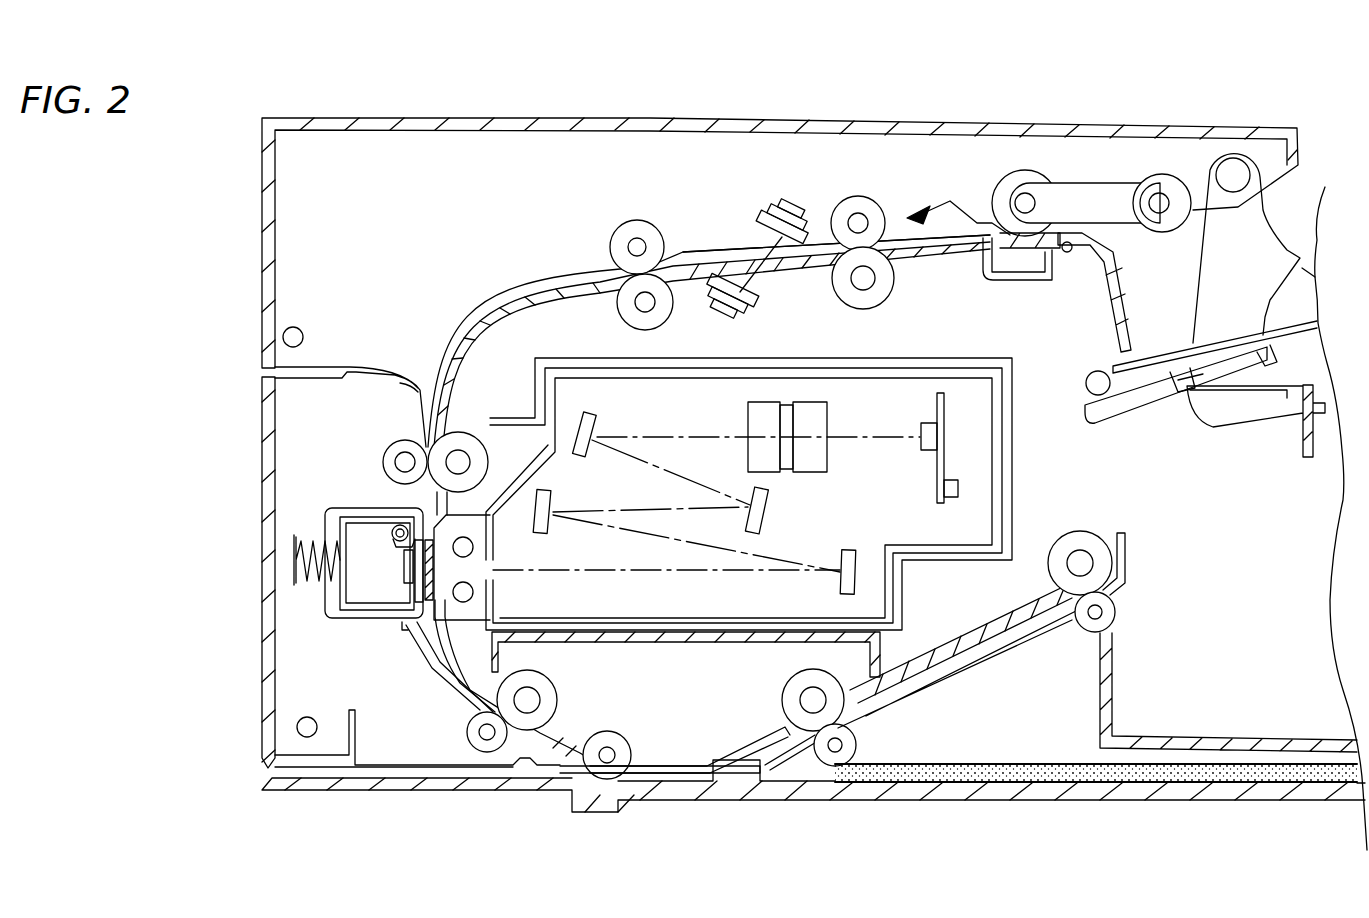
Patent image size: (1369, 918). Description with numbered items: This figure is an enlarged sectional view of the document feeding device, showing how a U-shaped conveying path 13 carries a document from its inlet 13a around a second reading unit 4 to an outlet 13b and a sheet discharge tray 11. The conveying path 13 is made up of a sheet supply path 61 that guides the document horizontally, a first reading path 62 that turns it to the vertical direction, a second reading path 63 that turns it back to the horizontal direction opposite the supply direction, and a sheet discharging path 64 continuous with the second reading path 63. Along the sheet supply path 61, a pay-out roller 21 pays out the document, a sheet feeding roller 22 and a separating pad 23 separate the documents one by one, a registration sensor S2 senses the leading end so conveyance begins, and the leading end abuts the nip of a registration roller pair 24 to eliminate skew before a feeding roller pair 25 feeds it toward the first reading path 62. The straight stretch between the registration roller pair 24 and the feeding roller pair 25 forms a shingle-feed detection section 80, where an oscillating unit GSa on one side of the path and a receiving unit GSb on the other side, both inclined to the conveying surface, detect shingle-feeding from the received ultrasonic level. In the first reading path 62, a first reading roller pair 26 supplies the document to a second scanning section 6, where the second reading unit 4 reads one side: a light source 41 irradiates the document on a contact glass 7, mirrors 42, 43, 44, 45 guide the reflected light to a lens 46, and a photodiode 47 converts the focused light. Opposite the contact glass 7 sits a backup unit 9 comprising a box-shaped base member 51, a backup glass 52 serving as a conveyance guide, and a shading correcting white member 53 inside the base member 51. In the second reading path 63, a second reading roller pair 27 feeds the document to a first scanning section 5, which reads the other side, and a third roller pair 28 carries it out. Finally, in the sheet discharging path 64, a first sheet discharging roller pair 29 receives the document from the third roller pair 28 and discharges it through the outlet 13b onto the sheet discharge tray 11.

The shingle-feed detection section 80 is at (740, 188).
The sheet feeding roller 22 is at (1025, 185).
The pay-out roller 21 is at (1160, 185).
The feeding roller pair 25 is at (630, 236).
The sheet supply path 61 is at (705, 258).
The oscillating unit GSa is at (783, 200).
The receiving unit GSb is at (750, 318).
The registration roller pair 24 is at (857, 205).
The registration sensor S2 is at (917, 207).
The U-shaped conveying path 13 is at (453, 296).
The inlet 13a is at (1128, 255).
The separating pad 23 is at (1025, 262).
The second reading unit 4 is at (903, 345).
The mirror 45 is at (594, 418).
The mirror 43 is at (553, 500).
The mirror 44 is at (768, 510).
The mirror 42 is at (840, 580).
The lens 46 is at (830, 419).
The photodiode 47 is at (925, 440).
The first reading roller pair 26 is at (397, 453).
The first reading path 62 is at (432, 505).
The backup unit 9 is at (335, 508).
The box-shaped base member 51 is at (333, 523).
The backup glass 52 is at (417, 530).
The shading correcting white member 53 is at (425, 565).
The contact glass 7 is at (440, 553).
The light source 41 is at (473, 547).
The second scanning section 6 is at (437, 603).
The second reading roller pair 27 is at (467, 727).
The first scanning section 5 is at (682, 733).
The second reading path 63 is at (668, 775).
The third roller pair 28 is at (857, 745).
The sheet discharging path 64 is at (962, 655).
The outlet 13b is at (1140, 600).
The first sheet discharging roller pair 29 is at (1115, 612).
The sheet discharge tray 11 is at (1267, 723).